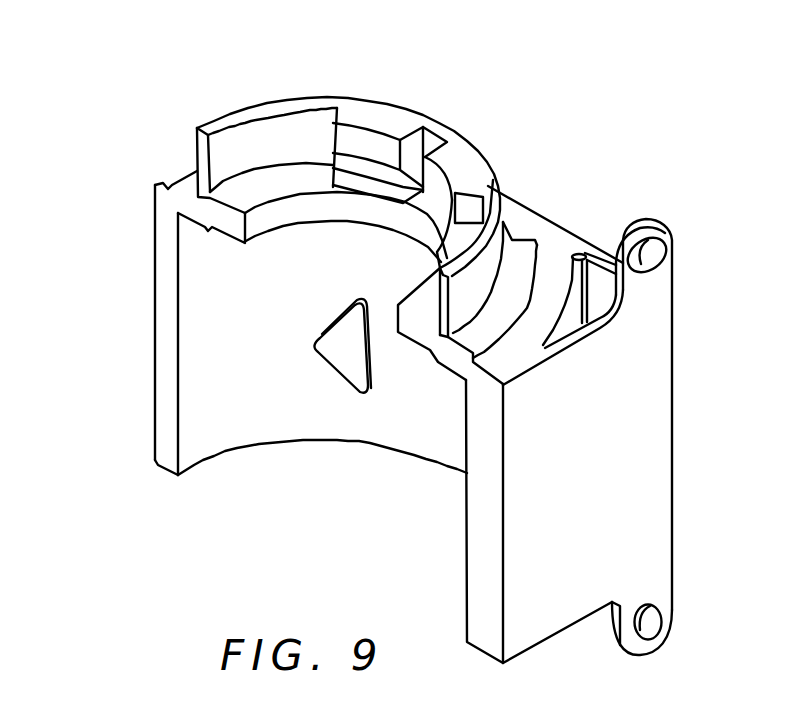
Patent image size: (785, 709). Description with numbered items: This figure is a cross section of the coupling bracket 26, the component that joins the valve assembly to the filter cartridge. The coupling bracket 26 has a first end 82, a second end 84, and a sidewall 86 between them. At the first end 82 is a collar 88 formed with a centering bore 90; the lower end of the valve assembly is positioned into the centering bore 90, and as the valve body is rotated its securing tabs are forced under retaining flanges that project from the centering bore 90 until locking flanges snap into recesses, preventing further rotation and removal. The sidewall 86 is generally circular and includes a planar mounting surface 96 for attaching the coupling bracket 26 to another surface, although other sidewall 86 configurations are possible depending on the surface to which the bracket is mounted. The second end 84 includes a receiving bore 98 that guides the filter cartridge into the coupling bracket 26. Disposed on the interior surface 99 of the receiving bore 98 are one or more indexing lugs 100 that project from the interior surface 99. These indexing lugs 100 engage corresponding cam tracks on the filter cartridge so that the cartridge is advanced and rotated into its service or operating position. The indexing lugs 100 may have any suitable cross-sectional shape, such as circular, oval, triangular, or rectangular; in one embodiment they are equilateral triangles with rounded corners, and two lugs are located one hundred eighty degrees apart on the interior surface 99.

The coupling bracket 26 is at (96, 199).
The first end 82 is at (230, 120).
The second end 84 is at (163, 473).
The sidewall 86 is at (155, 382).
The collar 88 is at (197, 152).
The centering bore 90 is at (270, 132).
The planar mounting surface 96 is at (658, 417).
The receiving bore 98 is at (197, 294).
The interior surface 99 is at (235, 435).
The indexing lugs 100 is at (343, 360).